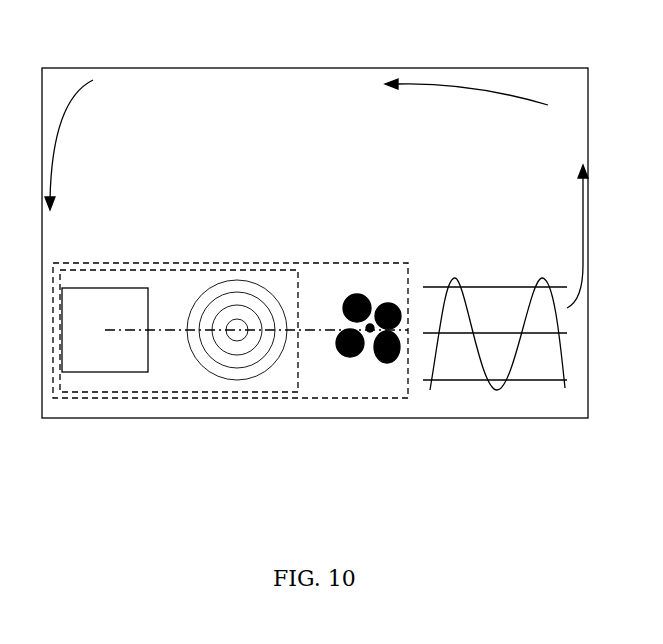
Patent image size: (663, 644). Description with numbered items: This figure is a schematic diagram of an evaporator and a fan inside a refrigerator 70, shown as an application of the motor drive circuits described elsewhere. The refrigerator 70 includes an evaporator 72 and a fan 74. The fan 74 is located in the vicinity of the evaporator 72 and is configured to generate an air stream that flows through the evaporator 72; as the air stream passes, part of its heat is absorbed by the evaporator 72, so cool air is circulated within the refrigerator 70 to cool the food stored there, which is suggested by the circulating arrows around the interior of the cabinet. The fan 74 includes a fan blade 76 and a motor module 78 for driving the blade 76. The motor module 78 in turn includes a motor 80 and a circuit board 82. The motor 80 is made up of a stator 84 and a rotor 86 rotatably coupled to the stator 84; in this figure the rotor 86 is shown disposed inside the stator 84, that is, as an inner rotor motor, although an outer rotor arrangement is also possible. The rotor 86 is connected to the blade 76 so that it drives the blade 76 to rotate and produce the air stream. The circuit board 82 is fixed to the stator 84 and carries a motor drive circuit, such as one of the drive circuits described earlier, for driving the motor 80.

The refrigerator 70 is at (285, 68).
The evaporator 72 is at (455, 278).
The fan 74 is at (386, 262).
The fan blade 76 is at (378, 362).
The motor module 78 is at (200, 263).
The motor 80 is at (264, 478).
The circuit board 82 is at (98, 288).
The stator 84 is at (262, 372).
The rotor 86 is at (213, 337).